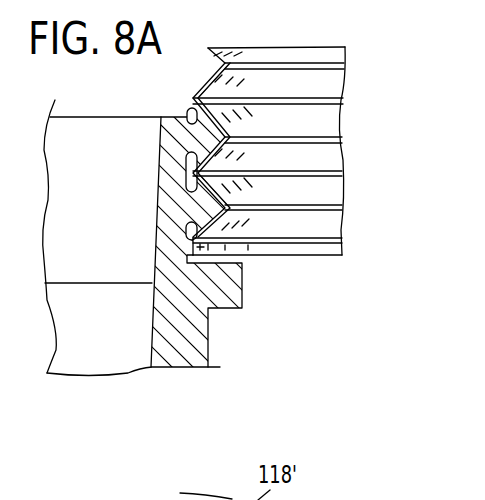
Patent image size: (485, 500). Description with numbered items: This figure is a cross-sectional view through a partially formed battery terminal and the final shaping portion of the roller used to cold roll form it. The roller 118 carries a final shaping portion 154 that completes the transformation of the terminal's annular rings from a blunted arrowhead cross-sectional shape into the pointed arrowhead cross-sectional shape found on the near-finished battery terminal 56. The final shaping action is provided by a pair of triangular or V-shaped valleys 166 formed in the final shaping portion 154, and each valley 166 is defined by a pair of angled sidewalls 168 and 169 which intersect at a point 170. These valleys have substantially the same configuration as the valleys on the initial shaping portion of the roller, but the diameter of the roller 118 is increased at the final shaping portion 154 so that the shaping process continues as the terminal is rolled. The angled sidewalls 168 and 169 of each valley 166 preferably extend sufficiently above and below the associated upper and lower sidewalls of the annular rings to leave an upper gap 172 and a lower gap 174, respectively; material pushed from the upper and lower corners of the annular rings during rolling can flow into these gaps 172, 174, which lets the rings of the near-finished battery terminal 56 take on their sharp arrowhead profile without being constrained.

The near-finished battery terminal 56 is at (178, 384).
The roller 118 is at (352, 53).
The final shaping portion 154 is at (266, 268).
The valley 166 is at (353, 135).
The angled sidewall 168 is at (333, 117).
The angled sidewall 169 is at (332, 153).
The point 170 is at (310, 146).
The upper gap 172 is at (192, 110).
The lower gap 174 is at (186, 161).